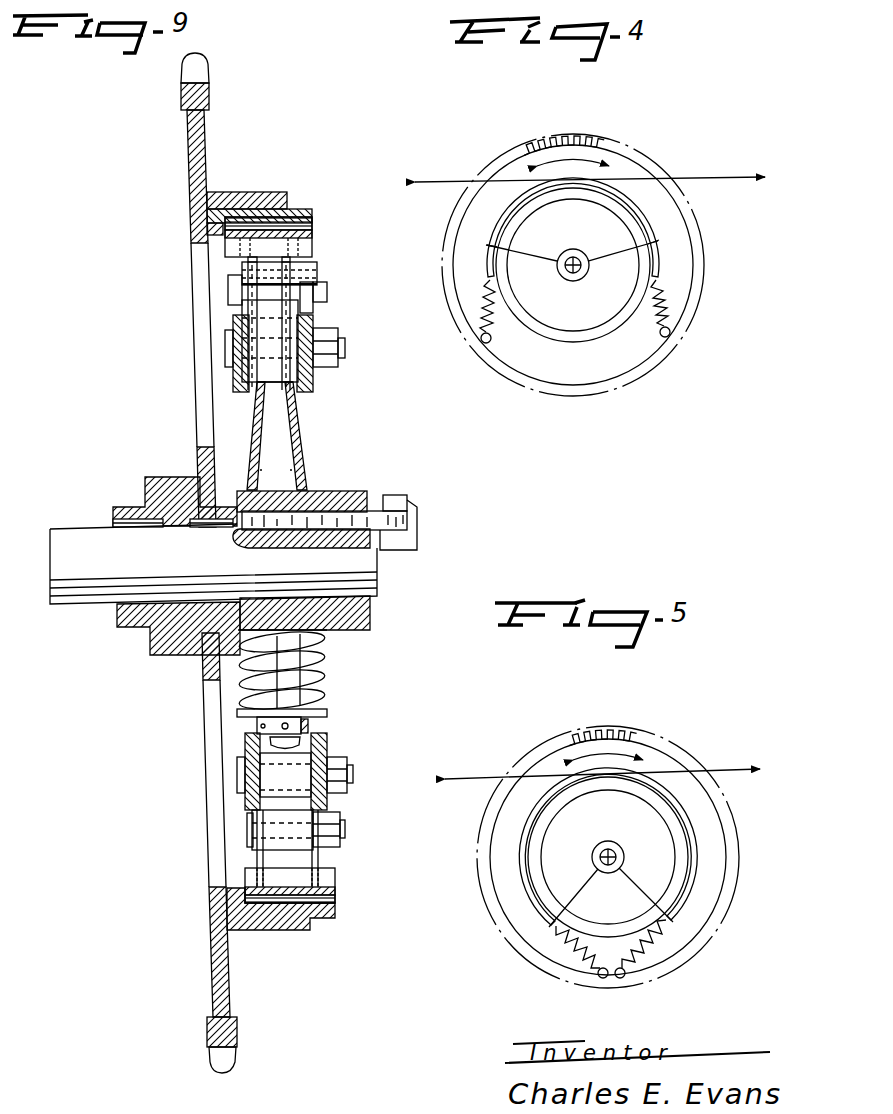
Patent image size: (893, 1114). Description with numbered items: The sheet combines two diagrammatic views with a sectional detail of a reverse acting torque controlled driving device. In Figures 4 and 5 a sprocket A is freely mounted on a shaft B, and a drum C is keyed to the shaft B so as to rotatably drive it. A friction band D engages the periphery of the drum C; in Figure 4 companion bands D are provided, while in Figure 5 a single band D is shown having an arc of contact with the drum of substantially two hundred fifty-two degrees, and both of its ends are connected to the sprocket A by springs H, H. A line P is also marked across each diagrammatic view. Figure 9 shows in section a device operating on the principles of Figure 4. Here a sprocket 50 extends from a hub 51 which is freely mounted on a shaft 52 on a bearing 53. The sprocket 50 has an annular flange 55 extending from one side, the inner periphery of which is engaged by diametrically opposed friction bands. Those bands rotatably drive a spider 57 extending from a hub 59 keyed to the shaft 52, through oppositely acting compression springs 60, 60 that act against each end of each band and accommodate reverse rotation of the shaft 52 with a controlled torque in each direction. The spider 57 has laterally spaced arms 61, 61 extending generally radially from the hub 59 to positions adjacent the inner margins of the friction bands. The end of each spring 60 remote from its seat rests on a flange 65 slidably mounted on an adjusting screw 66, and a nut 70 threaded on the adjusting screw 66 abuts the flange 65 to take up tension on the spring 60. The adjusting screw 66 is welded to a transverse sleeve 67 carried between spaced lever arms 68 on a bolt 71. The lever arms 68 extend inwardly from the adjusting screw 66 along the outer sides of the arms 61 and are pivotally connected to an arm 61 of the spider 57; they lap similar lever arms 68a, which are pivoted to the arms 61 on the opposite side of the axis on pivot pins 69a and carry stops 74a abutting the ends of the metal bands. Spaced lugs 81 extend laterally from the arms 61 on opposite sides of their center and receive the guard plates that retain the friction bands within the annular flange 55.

In FIG. 9, the sprocket 50 is at (183, 70).
In FIG. 9, the hub 51 is at (163, 478).
In FIG. 9, the shaft 52 is at (88, 606).
In FIG. 9, the bearing 53 is at (113, 528).
In FIG. 9, the annular flange 55 is at (258, 192).
In FIG. 9, the spider 57 is at (305, 424).
In FIG. 9, the hub 59 is at (357, 491).
In FIG. 9, the compression springs 60 is at (322, 668).
In FIG. 9, the arms 61 is at (252, 470).
In FIG. 9, the flange 65 is at (327, 712).
In FIG. 9, the adjusting screw 66 is at (262, 737).
In FIG. 9, the transverse sleeve 67 is at (265, 803).
In FIG. 9, the lever arms 68 is at (313, 382).
In FIG. 9, the lever arms 68a is at (245, 264).
In FIG. 9, the pivot pins 69a is at (328, 292).
In FIG. 9, the nut 70 is at (327, 714).
In FIG. 9, the bolt 71 is at (342, 345).
In FIG. 9, the stops 74a is at (280, 247).
In FIG. 9, the lugs 81 is at (310, 265).
In FIG. 4, the sprocket A is at (643, 160).
In FIG. 5, the sprocket A is at (530, 748).
In FIG. 4, the shaft B is at (575, 262).
In FIG. 5, the shaft B is at (611, 850).
In FIG. 4, the drum C is at (583, 337).
In FIG. 5, the drum C is at (607, 935).
In FIG. 4, the friction band D is at (633, 212).
In FIG. 5, the friction band D is at (674, 811).
In FIG. 4, the springs H is at (487, 305).
In FIG. 5, the springs H is at (588, 955).
In FIG. 4, the force line P is at (590, 163).
In FIG. 5, the force line P is at (602, 756).